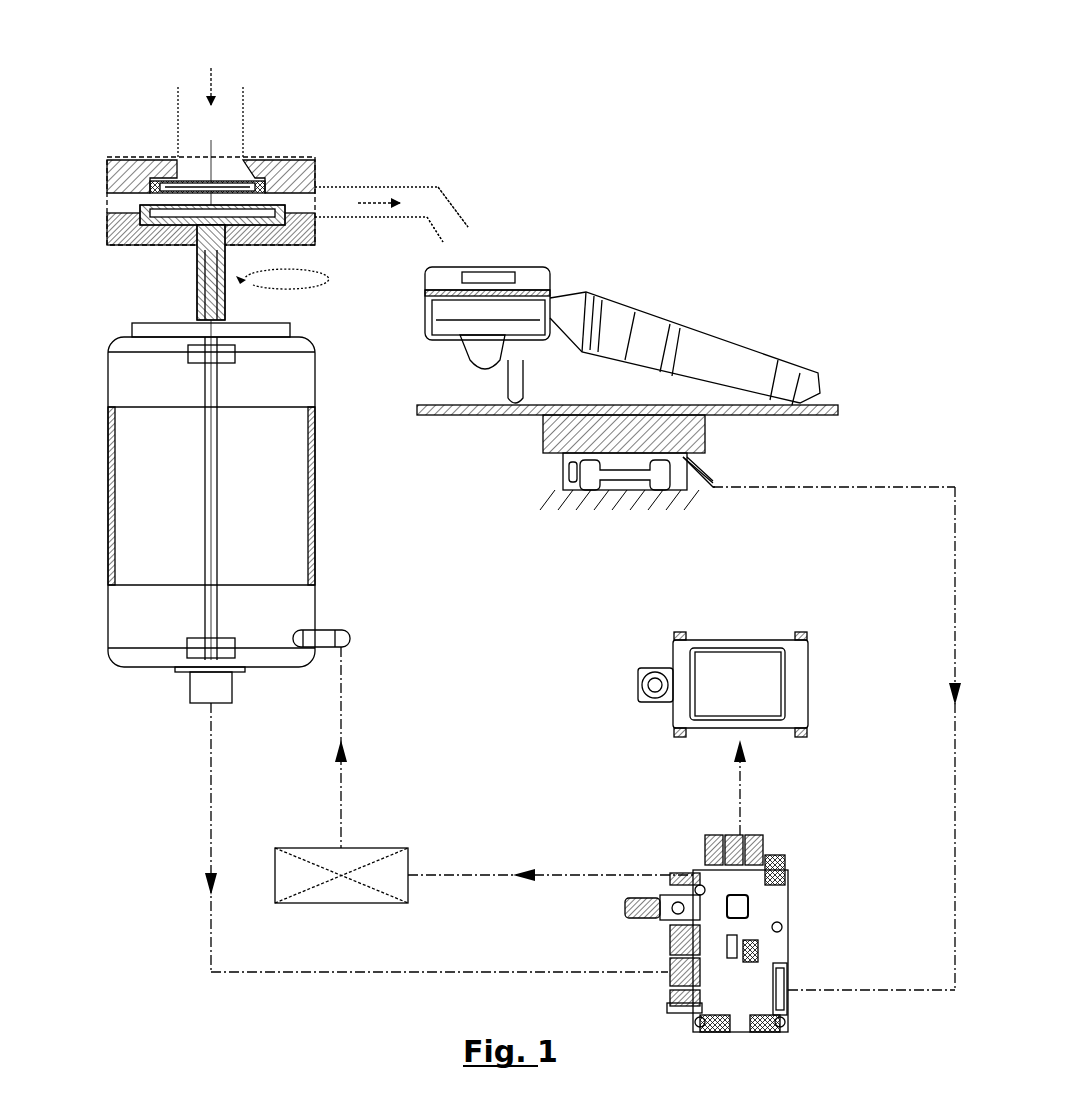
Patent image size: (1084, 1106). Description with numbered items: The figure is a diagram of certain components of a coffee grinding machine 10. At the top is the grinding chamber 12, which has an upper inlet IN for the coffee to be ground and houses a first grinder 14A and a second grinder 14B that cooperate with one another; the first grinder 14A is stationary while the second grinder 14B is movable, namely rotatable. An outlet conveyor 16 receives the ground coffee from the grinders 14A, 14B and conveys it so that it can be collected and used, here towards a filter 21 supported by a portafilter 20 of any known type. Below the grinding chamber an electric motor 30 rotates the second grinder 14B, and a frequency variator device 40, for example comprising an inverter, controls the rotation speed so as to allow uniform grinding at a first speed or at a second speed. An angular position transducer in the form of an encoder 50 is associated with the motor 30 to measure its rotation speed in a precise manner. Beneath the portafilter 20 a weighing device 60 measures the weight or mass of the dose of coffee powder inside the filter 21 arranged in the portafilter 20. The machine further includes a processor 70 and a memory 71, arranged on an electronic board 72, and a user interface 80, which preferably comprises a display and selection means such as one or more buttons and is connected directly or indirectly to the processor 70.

The coffee grinding machine 10 is at (592, 118).
The grinding chamber 12 is at (107, 170).
The first grinder 14A is at (192, 182).
The second grinder 14B is at (118, 232).
The outlet conveyor 16 is at (443, 217).
The portafilter 20 is at (578, 311).
The filter 21 is at (490, 268).
The electric motor 30 is at (138, 462).
The frequency variator device 40 is at (380, 855).
The encoder 50 is at (200, 693).
The weighing device 60 is at (677, 477).
The processor 70 is at (776, 907).
The memory 71 is at (808, 867).
The electronic board 72 is at (750, 902).
The user interface 80 is at (797, 650).